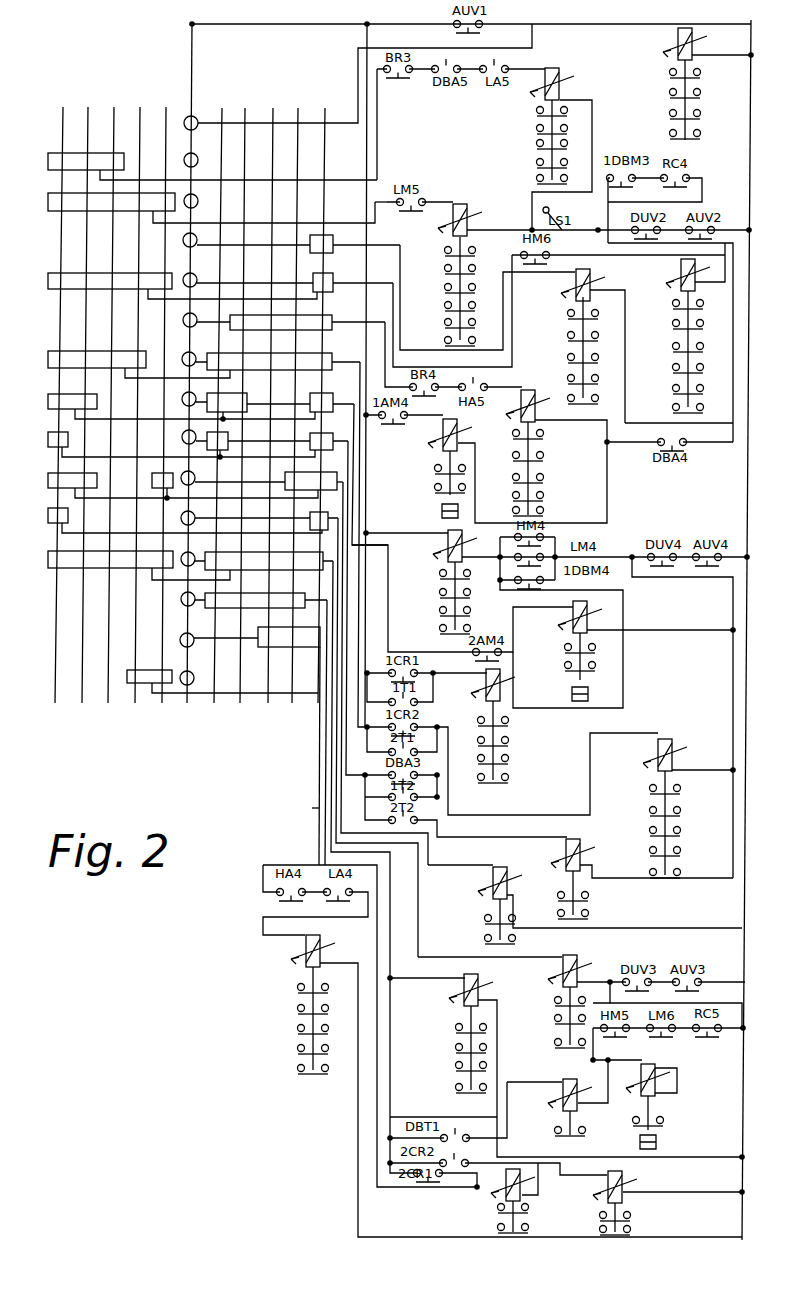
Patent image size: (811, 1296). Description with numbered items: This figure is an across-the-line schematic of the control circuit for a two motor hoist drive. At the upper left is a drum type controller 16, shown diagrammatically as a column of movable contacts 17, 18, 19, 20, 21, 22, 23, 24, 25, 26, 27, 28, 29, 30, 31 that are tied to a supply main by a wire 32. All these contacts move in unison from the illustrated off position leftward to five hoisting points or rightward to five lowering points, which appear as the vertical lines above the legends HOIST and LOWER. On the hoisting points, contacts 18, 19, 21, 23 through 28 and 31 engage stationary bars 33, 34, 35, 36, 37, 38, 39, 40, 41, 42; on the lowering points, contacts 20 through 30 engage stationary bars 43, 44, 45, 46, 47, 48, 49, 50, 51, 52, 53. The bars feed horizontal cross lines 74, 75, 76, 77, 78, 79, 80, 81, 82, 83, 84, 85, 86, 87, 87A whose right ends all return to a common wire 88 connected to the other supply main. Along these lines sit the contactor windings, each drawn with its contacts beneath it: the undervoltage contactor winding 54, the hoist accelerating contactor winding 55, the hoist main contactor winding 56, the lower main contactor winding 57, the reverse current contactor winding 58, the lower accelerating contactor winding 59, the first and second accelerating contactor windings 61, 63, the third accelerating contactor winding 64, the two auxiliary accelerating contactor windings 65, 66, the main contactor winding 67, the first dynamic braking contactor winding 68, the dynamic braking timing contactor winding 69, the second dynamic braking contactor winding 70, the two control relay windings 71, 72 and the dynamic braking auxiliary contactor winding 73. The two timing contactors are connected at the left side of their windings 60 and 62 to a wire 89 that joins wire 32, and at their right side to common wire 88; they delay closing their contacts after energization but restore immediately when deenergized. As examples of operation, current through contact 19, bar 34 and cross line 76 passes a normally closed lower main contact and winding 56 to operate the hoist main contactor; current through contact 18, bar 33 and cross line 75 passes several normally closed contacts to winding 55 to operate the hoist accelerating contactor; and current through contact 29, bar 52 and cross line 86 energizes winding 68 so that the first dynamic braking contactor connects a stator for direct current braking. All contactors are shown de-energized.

The drum type controller 16 is at (186, 419).
The movable contact 17 is at (183, 128).
The movable contact 18 is at (183, 165).
The movable contact 19 is at (198, 196).
The movable contact 20 is at (197, 236).
The movable contact 21 is at (197, 276).
The movable contact 22 is at (197, 316).
The movable contact 23 is at (196, 355).
The movable contact 24 is at (182, 395).
The movable contact 25 is at (182, 433).
The movable contact 26 is at (195, 474).
The movable contact 27 is at (195, 514).
The movable contact 28 is at (195, 555).
The movable contact 29 is at (181, 595).
The movable contact 30 is at (180, 636).
The movable contact 31 is at (194, 674).
The wire 32 is at (193, 66).
The stationary bar 33 is at (73, 141).
The stationary bar 34 is at (73, 181).
The stationary bar 35 is at (73, 261).
The stationary bar 36 is at (73, 339).
The stationary bar 37 is at (73, 383).
The stationary bar 38 is at (48, 439).
The stationary bar 39 is at (152, 482).
The stationary bar 40 is at (68, 515).
The stationary bar 41 is at (78, 572).
The stationary bar 42 is at (127, 674).
The stationary bar 43 is at (333, 250).
The stationary bar 44 is at (333, 290).
The stationary bar 45 is at (260, 331).
The stationary bar 46 is at (332, 360).
The stationary bar 47 is at (310, 400).
The stationary bar 48 is at (310, 438).
The stationary bar 49 is at (285, 482).
The stationary bar 50 is at (310, 522).
The stationary bar 51 is at (265, 570).
The stationary bar 52 is at (248, 610).
The stationary bar 53 is at (275, 647).
The winding of contactor AUV 54 is at (678, 48).
The winding of contactor HA 55 is at (562, 82).
The winding of contactor HM 56 is at (470, 215).
The winding of contactor LM 57 is at (697, 268).
The winding of contactor RC 58 is at (570, 285).
The winding of contactor LA 59 is at (540, 410).
The winding of timing contactor 1T 60 is at (462, 440).
The winding of contactor 1AM 61 is at (440, 552).
The winding of timing contactor 2T 62 is at (572, 623).
The winding of contactor 2AM 63 is at (502, 690).
The winding of contactor 3AM 64 is at (675, 748).
The winding of contactor 1AA 65 is at (582, 850).
The winding of contactor 2AA 66 is at (490, 886).
The winding of contactor M 67 is at (580, 966).
The winding of contactor 1DBM 68 is at (480, 992).
The winding of timing contactor DBT 69 is at (660, 1075).
The winding of contactor 2DBM 70 is at (580, 1088).
The winding of contactor 1CR 71 is at (625, 1183).
The winding of contactor 2CR 72 is at (505, 1188).
The winding of contactor DBA 73 is at (305, 956).
The cross line 74 is at (380, 50).
The cross line 75 is at (377, 138).
The cross line 76 is at (375, 215).
The cross line 77 is at (386, 237).
The cross line 78 is at (380, 268).
The cross line 79 is at (380, 308).
The cross line 80 is at (355, 366).
The cross line 81 is at (350, 408).
The cross line 82 is at (345, 447).
The cross line 83 is at (314, 481).
The cross line 84 is at (336, 543).
The cross line 85 is at (331, 578).
The cross line 86 is at (325, 615).
The cross line 87 is at (319, 665).
The cross line 87A is at (299, 808).
The common wire 88 is at (751, 33).
The wire 89 is at (255, 24).